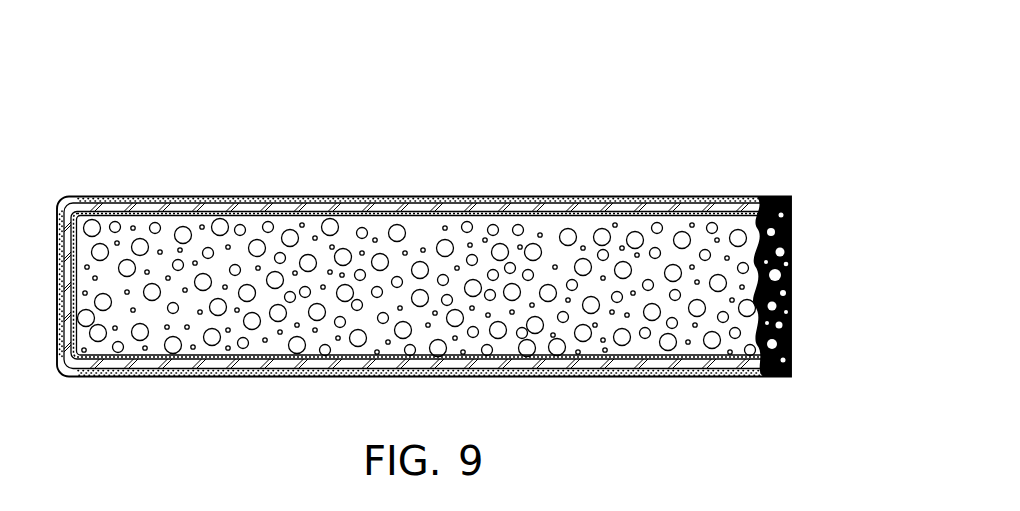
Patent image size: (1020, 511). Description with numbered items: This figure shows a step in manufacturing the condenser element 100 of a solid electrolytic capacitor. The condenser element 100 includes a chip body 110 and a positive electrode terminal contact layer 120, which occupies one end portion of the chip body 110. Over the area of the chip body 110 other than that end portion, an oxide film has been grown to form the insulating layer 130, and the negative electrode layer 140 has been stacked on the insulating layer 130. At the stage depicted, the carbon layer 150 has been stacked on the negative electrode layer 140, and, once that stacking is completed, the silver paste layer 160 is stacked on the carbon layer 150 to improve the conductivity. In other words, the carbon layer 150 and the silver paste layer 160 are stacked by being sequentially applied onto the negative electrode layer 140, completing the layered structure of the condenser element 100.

The condenser element 100 is at (582, 45).
The chip body 110 is at (485, 223).
The positive electrode terminal contact layer 120 is at (792, 316).
The insulating layer 130 is at (577, 214).
The negative electrode layer 140 is at (657, 218).
The carbon layer 150 is at (226, 201).
The silver paste layer 160 is at (331, 204).